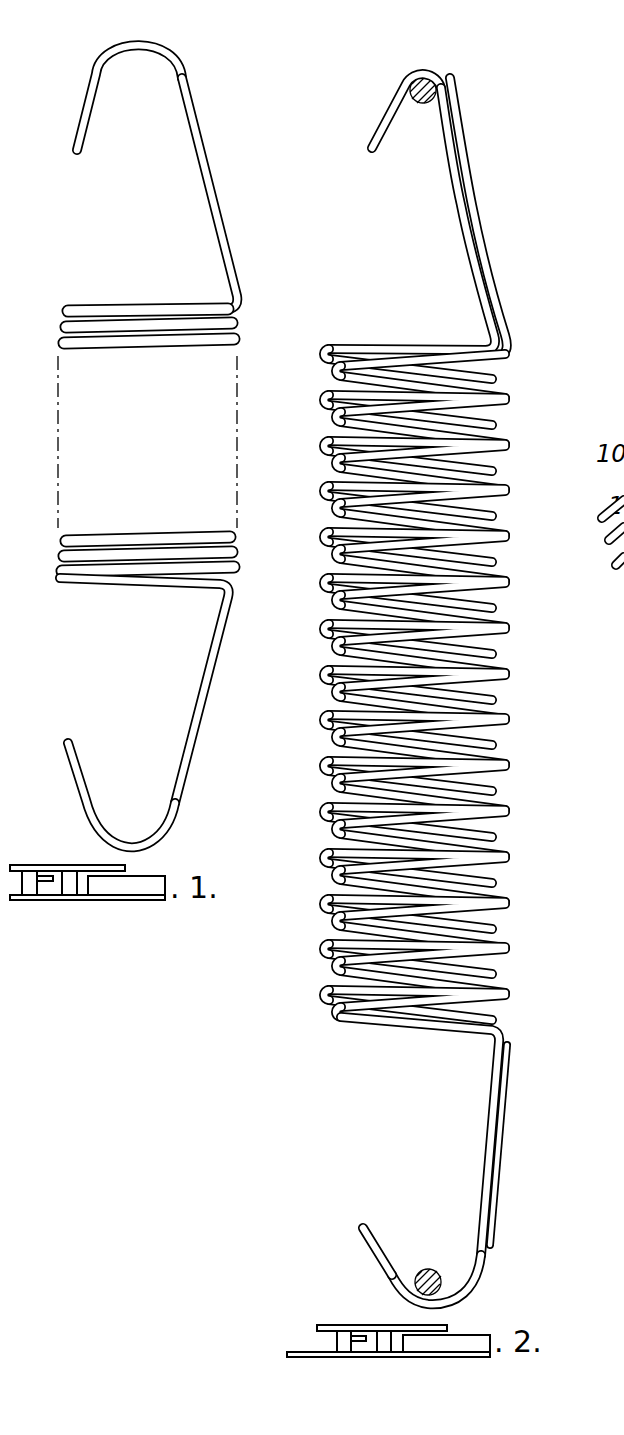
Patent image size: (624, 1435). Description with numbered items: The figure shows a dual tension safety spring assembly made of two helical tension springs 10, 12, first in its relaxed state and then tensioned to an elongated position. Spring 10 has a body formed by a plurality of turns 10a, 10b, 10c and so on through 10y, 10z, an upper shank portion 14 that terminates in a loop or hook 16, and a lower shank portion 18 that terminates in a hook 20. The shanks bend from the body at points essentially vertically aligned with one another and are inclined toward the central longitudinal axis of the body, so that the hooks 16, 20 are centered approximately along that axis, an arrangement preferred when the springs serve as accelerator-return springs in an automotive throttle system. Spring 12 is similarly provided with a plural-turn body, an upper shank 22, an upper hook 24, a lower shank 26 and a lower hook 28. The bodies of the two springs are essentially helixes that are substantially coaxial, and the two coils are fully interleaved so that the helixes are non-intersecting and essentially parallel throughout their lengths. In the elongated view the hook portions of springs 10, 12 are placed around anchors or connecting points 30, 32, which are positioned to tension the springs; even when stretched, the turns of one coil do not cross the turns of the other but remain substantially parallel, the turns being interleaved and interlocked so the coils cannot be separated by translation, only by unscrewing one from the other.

In FIG. 1, the helical tension spring 10 is at (125, 305).
In FIG. 2, the helical tension spring 10 is at (420, 342).
In FIG. 1, the turn of spring body 10a is at (63, 303).
In FIG. 2, the turn of spring body 10a is at (322, 348).
In FIG. 1, the turn of spring body 10b is at (62, 325).
In FIG. 2, the turn of spring body 10b is at (324, 401).
In FIG. 1, the turn of spring body 10c is at (60, 346).
In FIG. 2, the turn of spring body 10c is at (324, 446).
In FIG. 1, the turn of spring body 10y is at (62, 553).
In FIG. 2, the turn of spring body 10y is at (324, 951).
In FIG. 1, the turn of spring body 10z is at (58, 578).
In FIG. 2, the turn of spring body 10z is at (324, 997).
In FIG. 1, the helical tension spring 12 is at (178, 312).
In FIG. 2, the helical tension spring 12 is at (490, 353).
In FIG. 1, the upper shank portion 14 is at (209, 150).
In FIG. 2, the upper shank portion 14 is at (458, 210).
In FIG. 1, the hook 16 is at (150, 42).
In FIG. 2, the hook 16 is at (423, 70).
In FIG. 1, the lower shank portion 18 is at (202, 674).
In FIG. 2, the lower shank portion 18 is at (490, 1063).
In FIG. 1, the hook 20 is at (123, 838).
In FIG. 2, the hook 20 is at (465, 1290).
In FIG. 2, the upper shank 22 is at (472, 170).
In FIG. 2, the upper hook 24 is at (445, 68).
In FIG. 2, the lower shank 26 is at (494, 1140).
In FIG. 2, the lower hook 28 is at (420, 1310).
In FIG. 2, the anchor 30 is at (420, 108).
In FIG. 2, the anchor 32 is at (428, 1268).